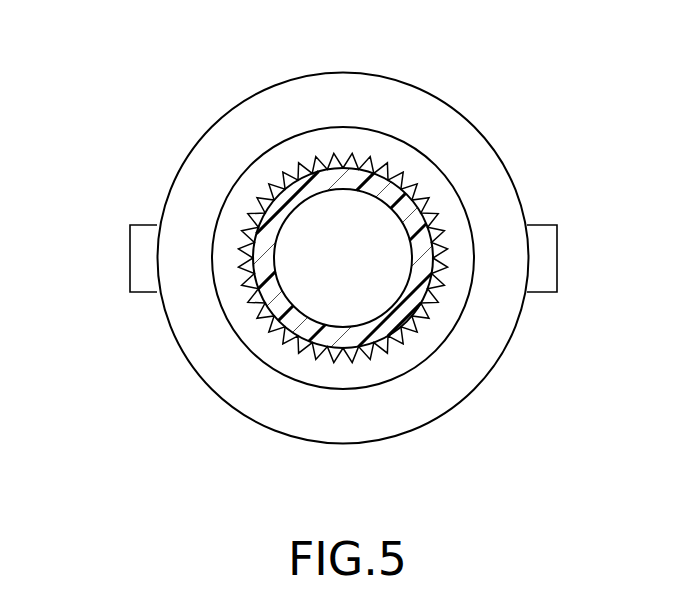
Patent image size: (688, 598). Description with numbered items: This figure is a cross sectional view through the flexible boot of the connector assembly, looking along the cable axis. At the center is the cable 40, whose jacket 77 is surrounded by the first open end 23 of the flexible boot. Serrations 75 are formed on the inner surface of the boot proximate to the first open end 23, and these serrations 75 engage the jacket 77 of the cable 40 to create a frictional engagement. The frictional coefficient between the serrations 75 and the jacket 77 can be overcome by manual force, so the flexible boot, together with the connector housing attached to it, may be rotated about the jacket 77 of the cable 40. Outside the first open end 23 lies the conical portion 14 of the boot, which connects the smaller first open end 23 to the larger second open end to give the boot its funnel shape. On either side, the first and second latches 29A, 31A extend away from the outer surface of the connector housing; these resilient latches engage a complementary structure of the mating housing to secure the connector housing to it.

The conical portion 14 is at (450, 128).
The first open end 23 is at (349, 138).
The first latch 29A is at (142, 261).
The second latch 31A is at (547, 262).
The cable 40 is at (351, 267).
The serrations 75 is at (438, 302).
The jacket 77 is at (398, 318).